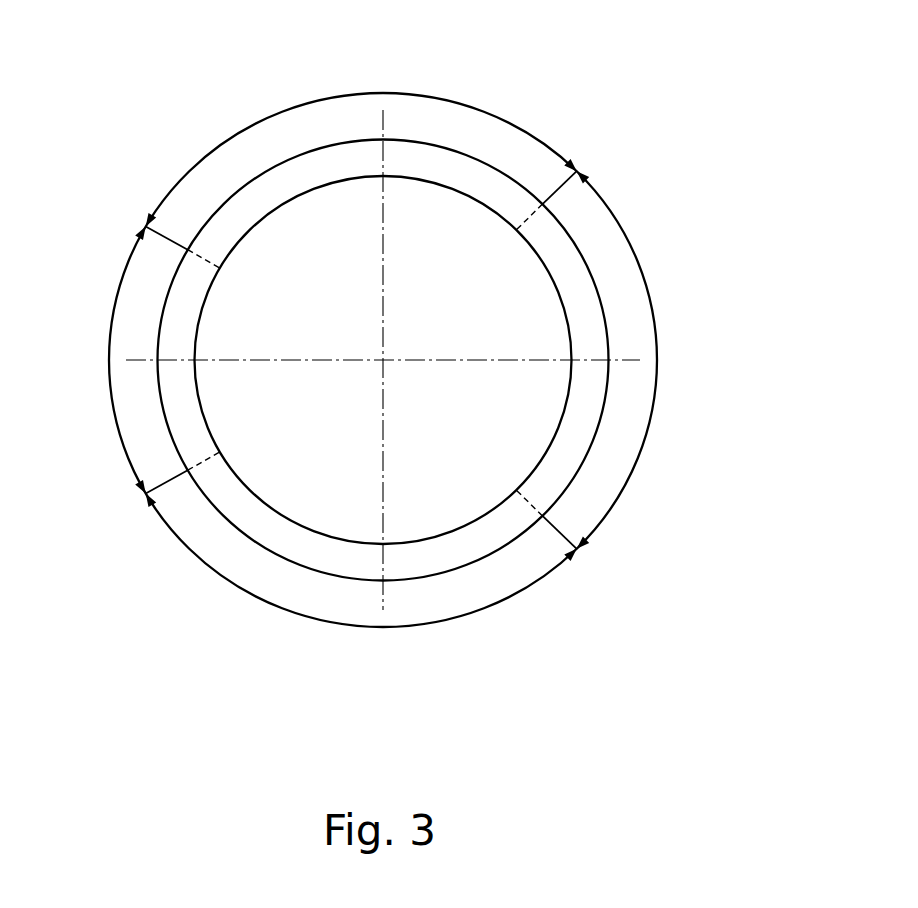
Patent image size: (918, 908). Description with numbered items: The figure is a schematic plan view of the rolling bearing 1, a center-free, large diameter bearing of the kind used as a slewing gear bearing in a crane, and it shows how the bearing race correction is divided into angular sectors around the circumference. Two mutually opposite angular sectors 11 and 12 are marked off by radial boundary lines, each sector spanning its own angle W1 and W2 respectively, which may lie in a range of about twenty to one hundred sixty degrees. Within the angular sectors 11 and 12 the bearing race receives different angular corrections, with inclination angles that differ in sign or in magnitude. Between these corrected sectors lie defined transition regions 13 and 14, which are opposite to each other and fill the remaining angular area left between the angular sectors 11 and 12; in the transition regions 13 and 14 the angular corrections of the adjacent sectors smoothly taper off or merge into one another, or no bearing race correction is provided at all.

The rolling bearing 1 is at (355, 635).
The angular sector 11 is at (588, 470).
The angular sector 12 is at (153, 443).
The transition region 13 is at (313, 578).
The transition region 14 is at (460, 142).
The angle of angular sector W1 is at (590, 536).
The angle of angular sector W2 is at (133, 247).